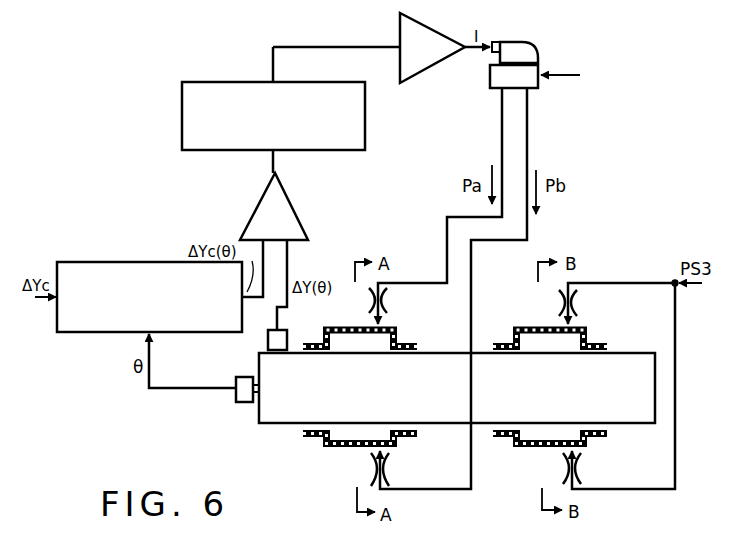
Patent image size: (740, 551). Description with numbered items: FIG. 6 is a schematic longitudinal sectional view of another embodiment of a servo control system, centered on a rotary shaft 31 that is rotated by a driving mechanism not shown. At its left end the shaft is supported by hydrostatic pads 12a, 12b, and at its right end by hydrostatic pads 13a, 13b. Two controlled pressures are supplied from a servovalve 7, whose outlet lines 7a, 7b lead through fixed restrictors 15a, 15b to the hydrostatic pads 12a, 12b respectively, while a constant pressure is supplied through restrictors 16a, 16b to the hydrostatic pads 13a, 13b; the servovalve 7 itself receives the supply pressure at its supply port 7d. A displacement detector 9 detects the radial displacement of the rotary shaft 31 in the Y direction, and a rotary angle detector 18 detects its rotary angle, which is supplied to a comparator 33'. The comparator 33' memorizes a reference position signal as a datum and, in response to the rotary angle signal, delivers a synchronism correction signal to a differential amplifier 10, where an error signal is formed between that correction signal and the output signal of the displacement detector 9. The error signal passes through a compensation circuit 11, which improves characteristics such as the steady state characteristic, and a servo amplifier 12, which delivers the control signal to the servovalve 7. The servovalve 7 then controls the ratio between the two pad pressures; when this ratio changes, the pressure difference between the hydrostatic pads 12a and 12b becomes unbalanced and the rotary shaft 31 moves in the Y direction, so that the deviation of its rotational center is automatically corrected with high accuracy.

The servo amplifier 12 is at (381, 48).
The servovalve 7 is at (540, 57).
The valve outlet line a 7a is at (502, 135).
The valve outlet line b 7b is at (527, 142).
The valve supply port 7d is at (566, 75).
The compensation circuit 11 is at (180, 114).
The differential amplifier 10 is at (274, 240).
The comparator 33' is at (149, 286).
The displacement detector 9 is at (268, 340).
The rotary angle detector 18 is at (236, 379).
The rotary shaft 31 is at (297, 397).
The hydrostatic pad 12a is at (407, 325).
The hydrostatic pad 12b is at (337, 452).
The hydrostatic pad 13a is at (522, 326).
The hydrostatic pad 13b is at (525, 450).
The fixed restrictor 15a is at (394, 298).
The fixed restrictor 15b is at (394, 466).
The restrictor 16a is at (584, 302).
The restrictor 16b is at (590, 468).